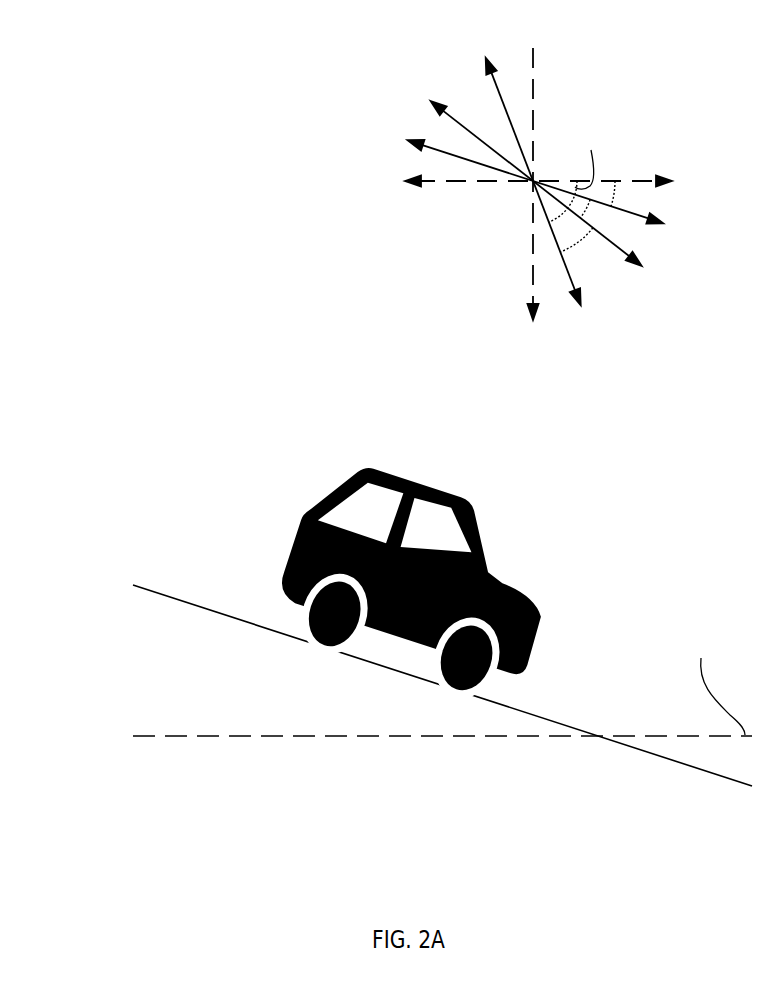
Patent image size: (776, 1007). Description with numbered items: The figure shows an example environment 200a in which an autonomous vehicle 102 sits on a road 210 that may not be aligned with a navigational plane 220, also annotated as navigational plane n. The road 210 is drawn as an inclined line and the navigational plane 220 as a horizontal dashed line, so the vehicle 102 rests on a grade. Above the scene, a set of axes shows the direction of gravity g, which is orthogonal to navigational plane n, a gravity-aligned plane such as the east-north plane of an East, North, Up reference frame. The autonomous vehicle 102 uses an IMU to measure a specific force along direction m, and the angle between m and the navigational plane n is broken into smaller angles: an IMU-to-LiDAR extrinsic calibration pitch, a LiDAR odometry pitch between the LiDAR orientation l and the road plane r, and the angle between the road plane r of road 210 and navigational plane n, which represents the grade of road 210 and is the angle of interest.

The example environment 200a is at (433, 428).
The autonomous vehicle 102 is at (458, 494).
The road 210 is at (185, 600).
The navigational plane 220 is at (233, 738).